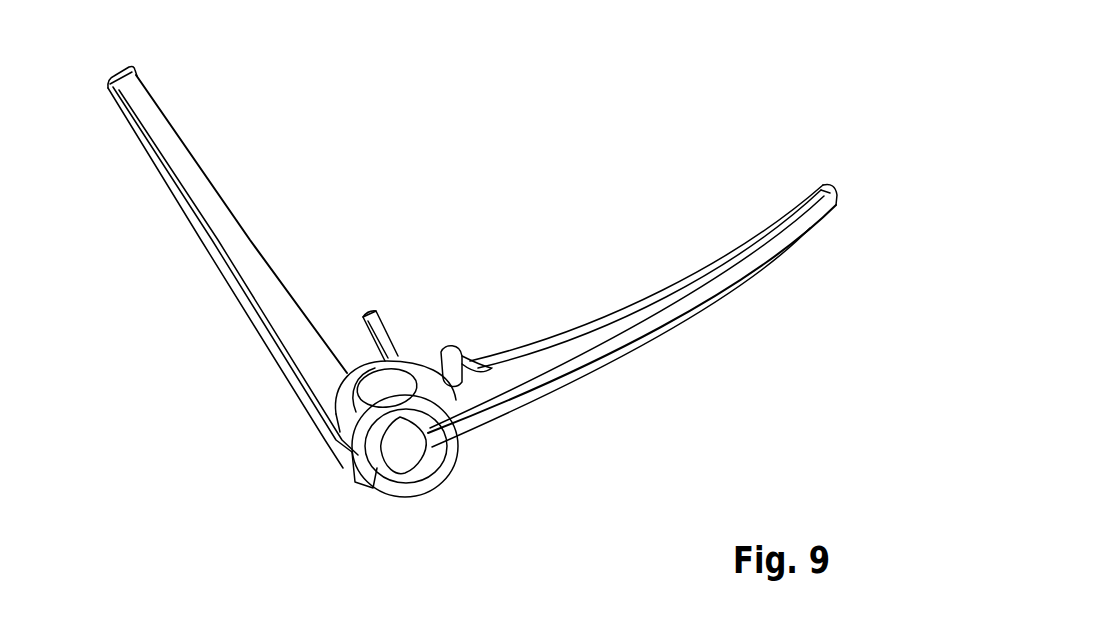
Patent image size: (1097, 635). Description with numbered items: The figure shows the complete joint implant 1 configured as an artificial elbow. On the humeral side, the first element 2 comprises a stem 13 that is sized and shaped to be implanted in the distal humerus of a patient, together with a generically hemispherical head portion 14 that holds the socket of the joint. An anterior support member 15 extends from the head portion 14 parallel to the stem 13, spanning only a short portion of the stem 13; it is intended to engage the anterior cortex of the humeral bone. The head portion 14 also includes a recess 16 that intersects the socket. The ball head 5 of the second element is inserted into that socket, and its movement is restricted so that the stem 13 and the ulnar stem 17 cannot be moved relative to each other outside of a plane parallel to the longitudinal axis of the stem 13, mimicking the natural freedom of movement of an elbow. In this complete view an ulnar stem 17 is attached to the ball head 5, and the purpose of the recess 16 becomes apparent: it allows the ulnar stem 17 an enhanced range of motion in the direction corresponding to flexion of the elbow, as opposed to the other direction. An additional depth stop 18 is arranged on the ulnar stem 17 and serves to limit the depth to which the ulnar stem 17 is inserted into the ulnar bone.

The joint implant 1 is at (252, 422).
The first element 2 is at (215, 270).
The ball head 5 is at (403, 457).
The stem 13 is at (160, 190).
The head portion 14 is at (345, 467).
The anterior support member 15 is at (379, 313).
The recess 16 is at (456, 450).
The ulnar stem 17 is at (657, 330).
The depth stop 18 is at (460, 347).